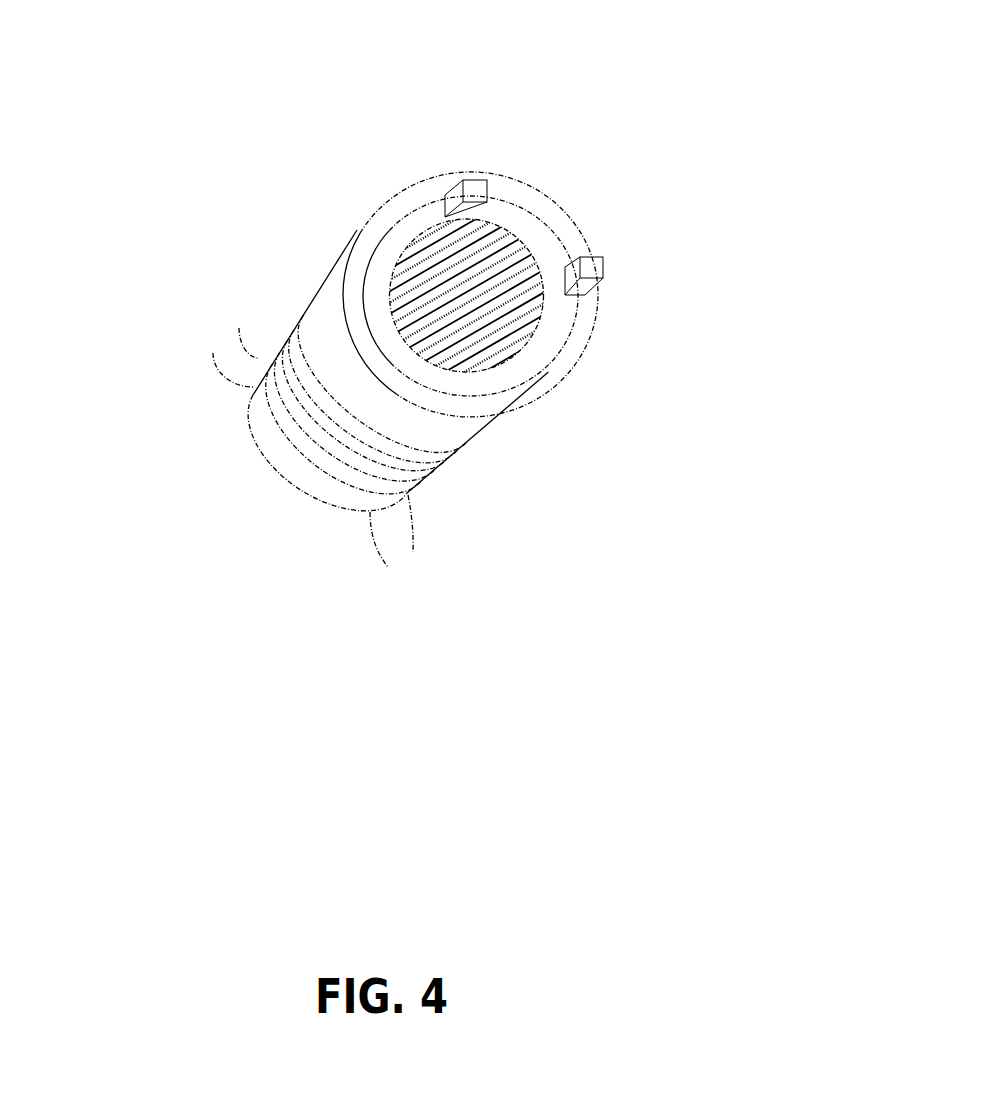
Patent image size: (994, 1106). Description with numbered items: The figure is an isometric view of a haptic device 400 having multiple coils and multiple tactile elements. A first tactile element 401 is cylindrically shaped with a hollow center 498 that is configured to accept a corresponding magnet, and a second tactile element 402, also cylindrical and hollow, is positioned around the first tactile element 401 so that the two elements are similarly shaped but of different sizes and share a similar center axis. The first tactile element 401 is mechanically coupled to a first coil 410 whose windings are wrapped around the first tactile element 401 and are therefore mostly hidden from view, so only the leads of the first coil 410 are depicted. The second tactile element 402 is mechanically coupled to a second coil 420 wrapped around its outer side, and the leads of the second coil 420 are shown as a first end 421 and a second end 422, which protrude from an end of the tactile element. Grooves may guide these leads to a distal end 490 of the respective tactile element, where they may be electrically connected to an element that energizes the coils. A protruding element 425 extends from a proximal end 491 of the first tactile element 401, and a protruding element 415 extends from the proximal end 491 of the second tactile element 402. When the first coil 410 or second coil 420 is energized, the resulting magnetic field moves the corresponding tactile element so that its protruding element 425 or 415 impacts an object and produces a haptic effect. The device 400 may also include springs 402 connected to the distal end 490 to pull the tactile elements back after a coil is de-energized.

The device 400 is at (532, 78).
The first tactile element 401 is at (495, 373).
The second tactile element 402 is at (399, 383).
The first coil 410 is at (345, 426).
The protruding element 415 is at (584, 281).
The second coil 420 is at (407, 412).
The first end 421 is at (258, 358).
The second end 422 is at (413, 523).
The protruding element 425 is at (465, 193).
The distal end 490 is at (292, 492).
The proximal end 491 is at (401, 188).
The hollow center 498 is at (466, 293).